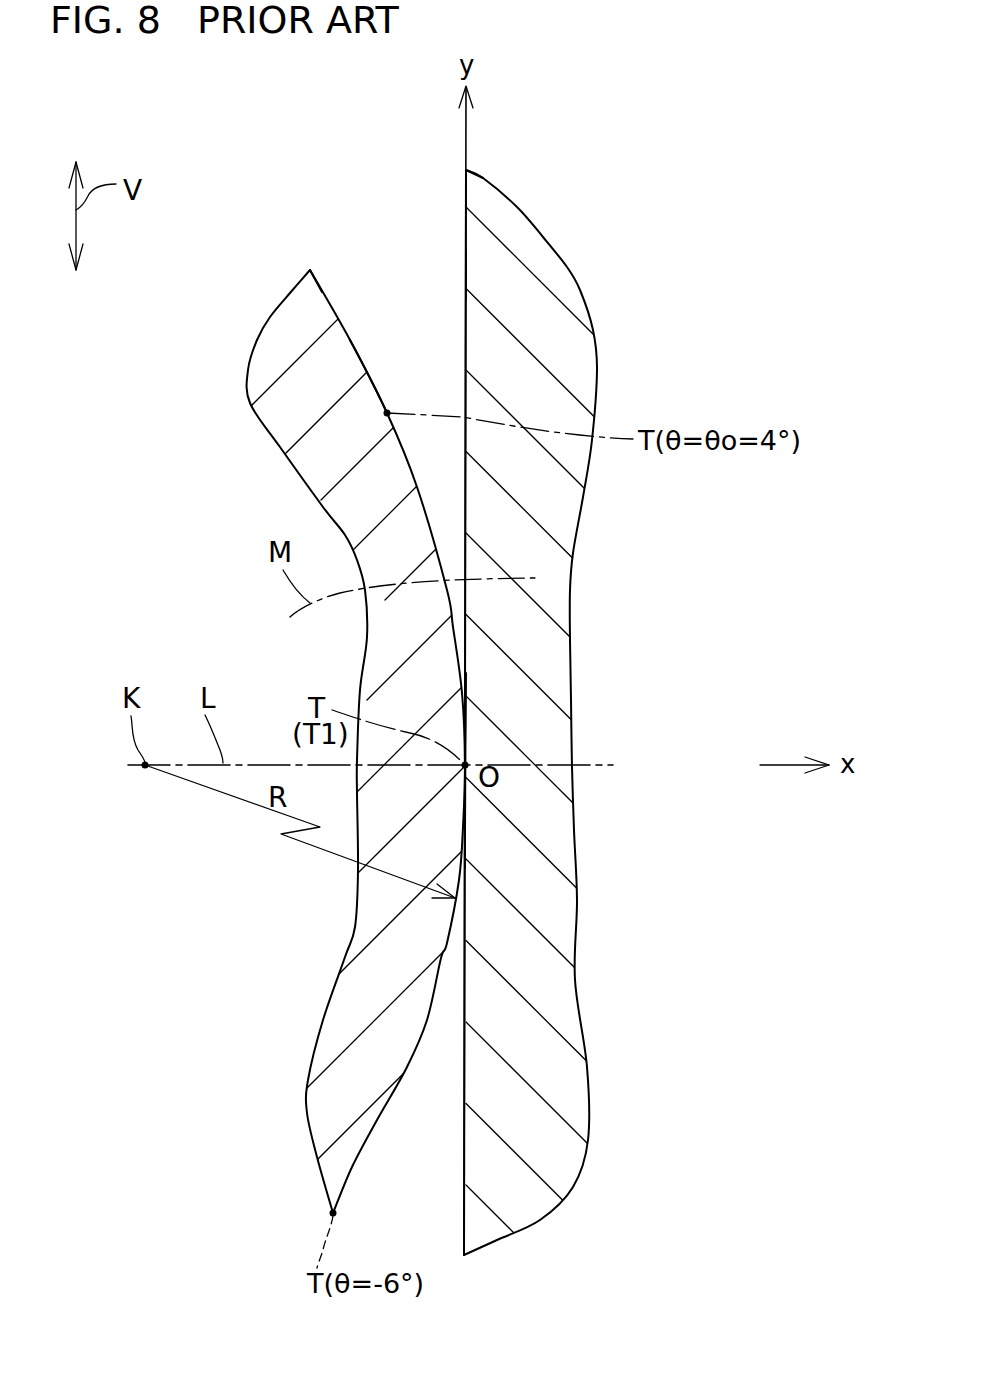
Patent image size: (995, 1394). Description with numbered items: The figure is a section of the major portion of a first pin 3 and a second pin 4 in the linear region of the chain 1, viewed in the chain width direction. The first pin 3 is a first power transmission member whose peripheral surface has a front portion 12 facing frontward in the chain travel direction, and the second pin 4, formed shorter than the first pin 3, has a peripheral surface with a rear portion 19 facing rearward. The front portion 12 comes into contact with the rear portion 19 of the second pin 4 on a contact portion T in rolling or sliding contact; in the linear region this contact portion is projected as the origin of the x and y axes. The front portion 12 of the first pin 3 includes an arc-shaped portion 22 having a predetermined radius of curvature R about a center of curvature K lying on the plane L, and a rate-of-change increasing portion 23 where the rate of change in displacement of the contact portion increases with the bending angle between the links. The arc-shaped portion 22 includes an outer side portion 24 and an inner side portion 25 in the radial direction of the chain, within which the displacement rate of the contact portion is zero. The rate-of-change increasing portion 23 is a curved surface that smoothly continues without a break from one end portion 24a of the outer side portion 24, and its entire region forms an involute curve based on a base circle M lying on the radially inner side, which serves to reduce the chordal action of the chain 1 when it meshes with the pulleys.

The chain 1 is at (578, 178).
The first pin 3 is at (272, 314).
The second pin 4 is at (466, 195).
The front portion 12 is at (324, 295).
The rear portion 19 is at (466, 278).
The arc-shaped portion 22 is at (666, 697).
The rate-of-change increasing portion 23 is at (348, 346).
The outer side portion 24 is at (466, 673).
The one end portion 24a is at (387, 413).
The inner side portion 25 is at (466, 868).